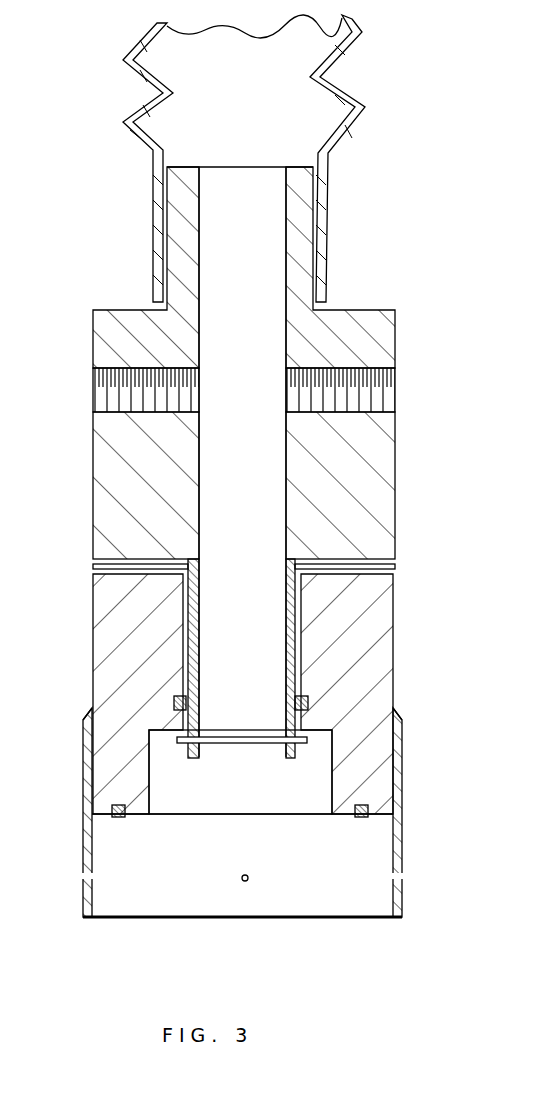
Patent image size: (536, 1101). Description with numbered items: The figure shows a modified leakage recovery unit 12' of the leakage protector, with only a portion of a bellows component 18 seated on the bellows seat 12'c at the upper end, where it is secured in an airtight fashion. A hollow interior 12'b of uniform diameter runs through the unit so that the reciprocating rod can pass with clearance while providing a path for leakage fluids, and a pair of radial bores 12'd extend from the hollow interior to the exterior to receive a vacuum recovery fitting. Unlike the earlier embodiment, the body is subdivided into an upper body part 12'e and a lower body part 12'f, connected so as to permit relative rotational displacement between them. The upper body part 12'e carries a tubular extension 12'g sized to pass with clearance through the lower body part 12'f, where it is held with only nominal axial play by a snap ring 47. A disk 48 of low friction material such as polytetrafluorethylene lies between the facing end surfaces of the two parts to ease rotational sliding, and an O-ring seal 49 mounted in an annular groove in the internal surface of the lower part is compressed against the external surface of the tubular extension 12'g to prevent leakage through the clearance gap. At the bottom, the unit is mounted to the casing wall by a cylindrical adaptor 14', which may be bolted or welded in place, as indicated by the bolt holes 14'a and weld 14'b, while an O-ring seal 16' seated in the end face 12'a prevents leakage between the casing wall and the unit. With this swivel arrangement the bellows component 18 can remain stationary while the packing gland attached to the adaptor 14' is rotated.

The bellows component 18 is at (357, 127).
The recovery unit 12' is at (249, 490).
The end face 12'a is at (337, 835).
The hollow interior 12'b is at (240, 462).
The bellows seat 12'c is at (243, 267).
The radial bores 12'd is at (249, 390).
The upper body part 12'e is at (206, 485).
The lower body part 12'f is at (207, 694).
The tubular extension 12'g is at (241, 658).
The adaptor 14' is at (245, 787).
The bolt holes 14'a is at (245, 879).
The weld 14'b is at (281, 688).
The O-ring seal 16' is at (136, 839).
The snap ring 47 is at (254, 745).
The disk 48 is at (388, 571).
The O-ring seal 49 is at (185, 702).